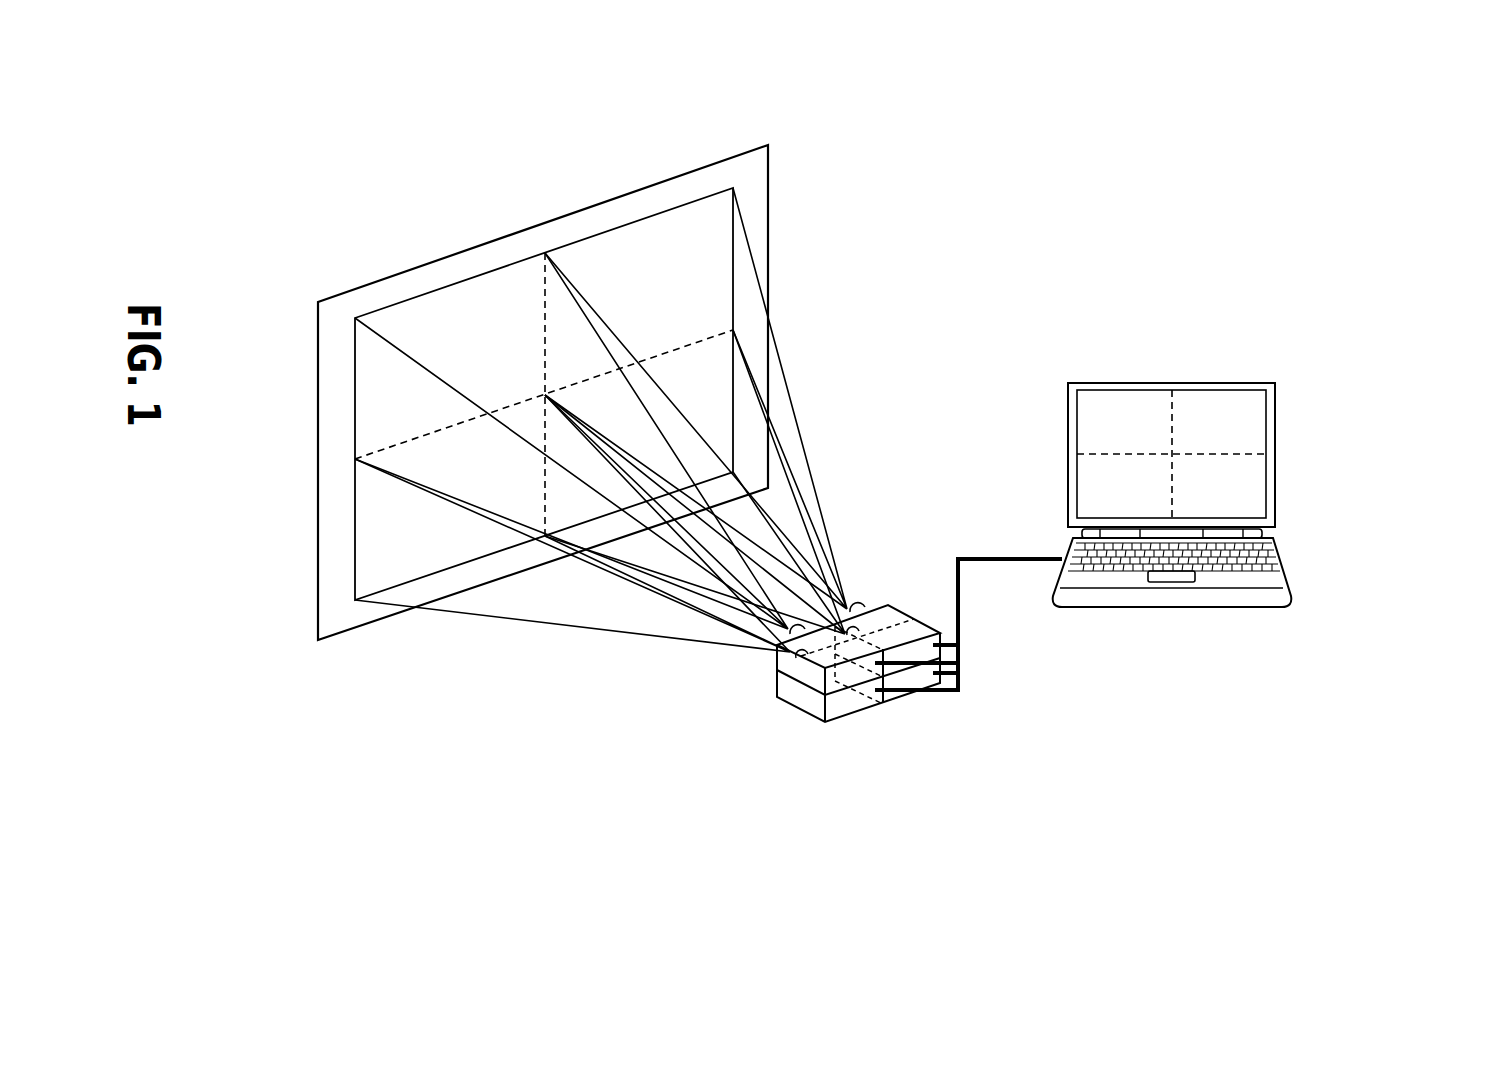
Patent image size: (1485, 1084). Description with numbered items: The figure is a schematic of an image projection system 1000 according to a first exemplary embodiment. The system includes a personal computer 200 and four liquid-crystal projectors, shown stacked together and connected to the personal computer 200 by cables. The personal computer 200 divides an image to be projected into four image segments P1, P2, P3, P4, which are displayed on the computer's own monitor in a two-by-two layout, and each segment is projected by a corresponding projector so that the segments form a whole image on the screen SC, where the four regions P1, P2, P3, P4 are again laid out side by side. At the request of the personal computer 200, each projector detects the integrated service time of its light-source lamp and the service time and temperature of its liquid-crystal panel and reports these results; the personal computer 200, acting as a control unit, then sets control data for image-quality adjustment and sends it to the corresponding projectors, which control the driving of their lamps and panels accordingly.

The image projection system 1000 is at (1153, 87).
The screen SC is at (769, 195).
The image segment P1 is at (450, 356).
The image segment P2 is at (639, 291).
The image segment P3 is at (450, 497).
The image segment P4 is at (639, 433).
The personal computer 200 is at (1284, 563).